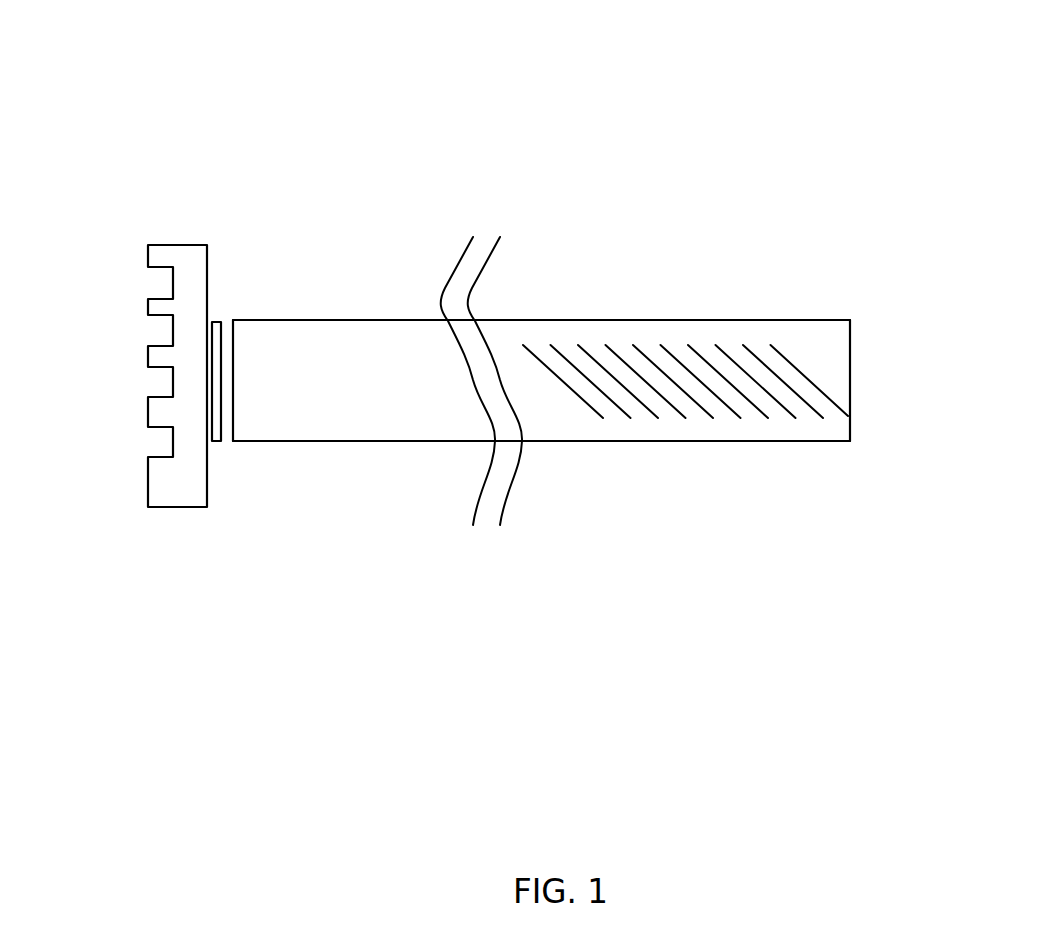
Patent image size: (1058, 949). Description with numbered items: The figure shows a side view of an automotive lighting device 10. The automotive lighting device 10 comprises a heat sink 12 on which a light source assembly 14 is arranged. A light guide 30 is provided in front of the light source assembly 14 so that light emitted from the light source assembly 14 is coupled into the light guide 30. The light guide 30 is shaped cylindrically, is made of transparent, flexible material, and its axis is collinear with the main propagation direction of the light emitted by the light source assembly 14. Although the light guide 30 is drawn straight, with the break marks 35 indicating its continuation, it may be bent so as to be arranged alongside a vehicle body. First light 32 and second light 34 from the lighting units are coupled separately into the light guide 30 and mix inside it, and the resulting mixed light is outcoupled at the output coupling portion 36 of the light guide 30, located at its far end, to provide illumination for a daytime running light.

The automotive lighting device 10 is at (697, 203).
The heat sink 12 is at (188, 476).
The light source assembly 14 is at (220, 330).
The light guide 30 is at (353, 399).
The first light 32 is at (234, 404).
The second light 34 is at (854, 392).
The break lines indicating variable length 35 is at (452, 218).
The output coupling portion 36 is at (788, 362).